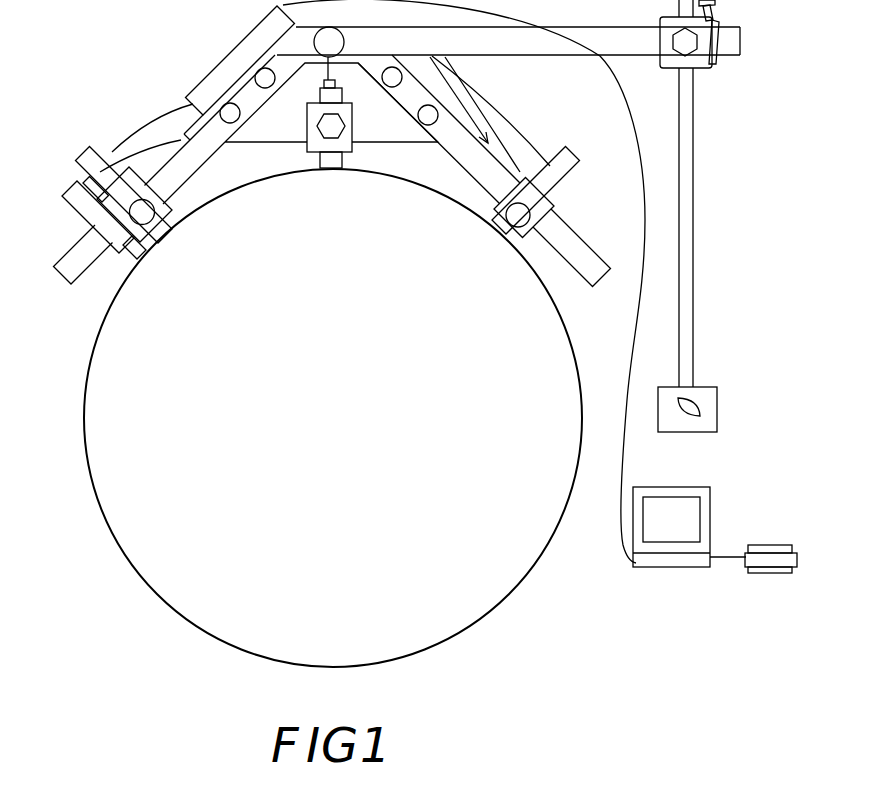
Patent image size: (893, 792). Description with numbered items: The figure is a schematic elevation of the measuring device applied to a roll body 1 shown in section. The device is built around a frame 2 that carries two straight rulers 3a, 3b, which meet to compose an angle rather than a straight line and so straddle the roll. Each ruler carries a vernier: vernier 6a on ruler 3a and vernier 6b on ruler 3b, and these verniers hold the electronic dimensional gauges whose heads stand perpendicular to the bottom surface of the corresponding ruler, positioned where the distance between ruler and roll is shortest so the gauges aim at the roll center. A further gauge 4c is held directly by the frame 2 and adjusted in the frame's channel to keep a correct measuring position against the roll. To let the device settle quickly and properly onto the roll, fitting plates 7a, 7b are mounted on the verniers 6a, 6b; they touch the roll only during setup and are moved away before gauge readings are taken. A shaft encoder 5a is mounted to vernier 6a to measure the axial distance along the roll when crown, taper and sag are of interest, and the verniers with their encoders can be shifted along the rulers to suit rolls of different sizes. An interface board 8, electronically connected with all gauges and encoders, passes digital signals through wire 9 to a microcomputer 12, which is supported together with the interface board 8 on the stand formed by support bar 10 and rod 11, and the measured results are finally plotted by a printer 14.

The roll / workpiece 1 is at (123, 502).
The frame 2 is at (277, 123).
The straight ruler 3a is at (72, 265).
The straight ruler 3b is at (583, 267).
The gauge 4c is at (334, 159).
The shaft encoder 5a is at (82, 218).
The vernier 6a is at (110, 203).
The vernier 6b is at (550, 202).
The fitting plate 7a is at (96, 162).
The fitting plate 7b is at (565, 165).
The interface board 8 is at (255, 43).
The wire 9 is at (630, 335).
The horizontal support bar 10 is at (733, 47).
The vertical rod with sensor 11 is at (687, 285).
The microcomputer 12 is at (683, 506).
The printer 14 is at (763, 555).